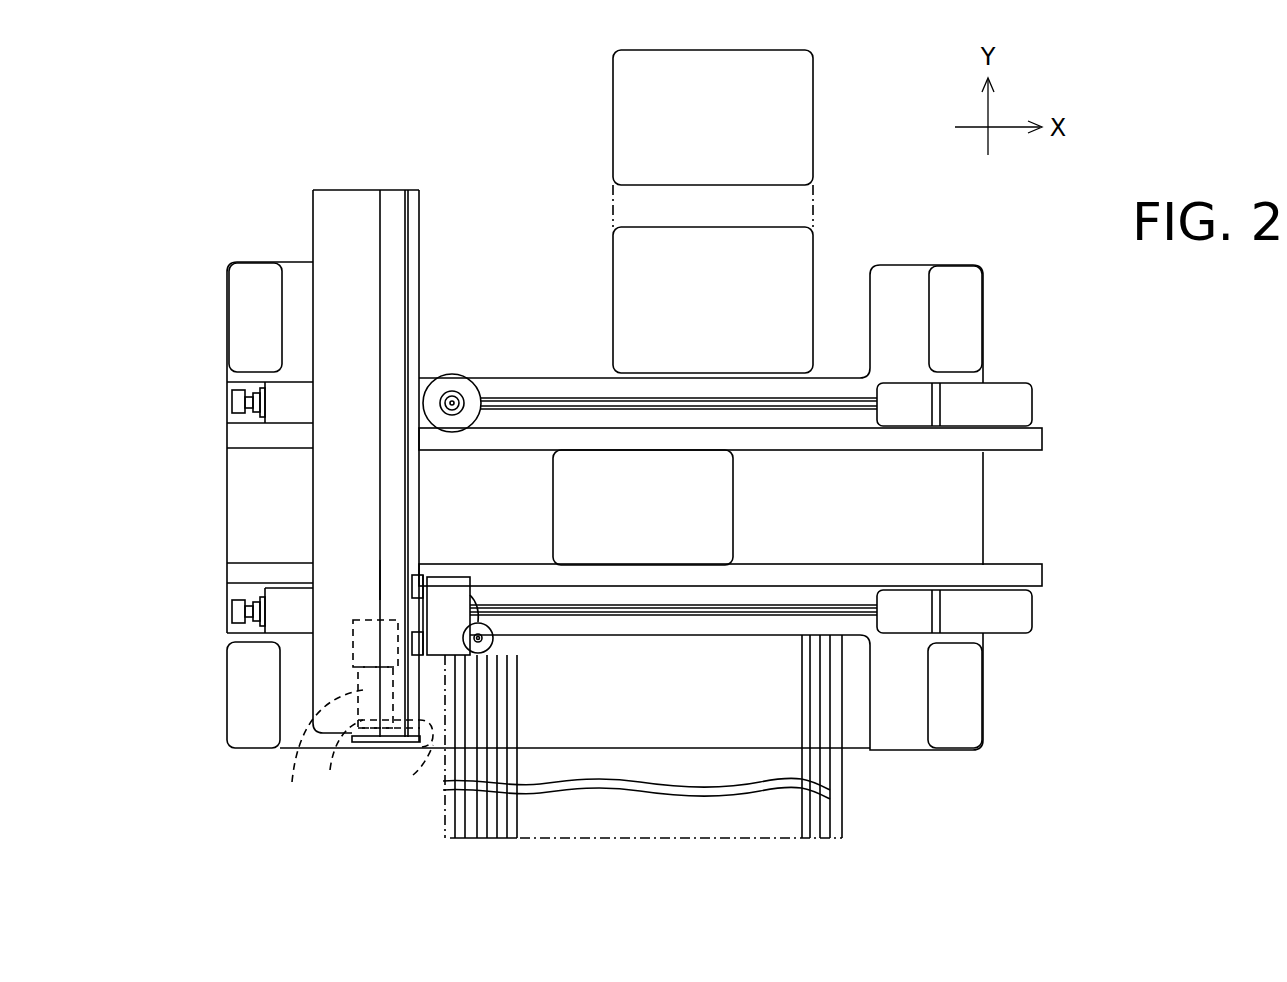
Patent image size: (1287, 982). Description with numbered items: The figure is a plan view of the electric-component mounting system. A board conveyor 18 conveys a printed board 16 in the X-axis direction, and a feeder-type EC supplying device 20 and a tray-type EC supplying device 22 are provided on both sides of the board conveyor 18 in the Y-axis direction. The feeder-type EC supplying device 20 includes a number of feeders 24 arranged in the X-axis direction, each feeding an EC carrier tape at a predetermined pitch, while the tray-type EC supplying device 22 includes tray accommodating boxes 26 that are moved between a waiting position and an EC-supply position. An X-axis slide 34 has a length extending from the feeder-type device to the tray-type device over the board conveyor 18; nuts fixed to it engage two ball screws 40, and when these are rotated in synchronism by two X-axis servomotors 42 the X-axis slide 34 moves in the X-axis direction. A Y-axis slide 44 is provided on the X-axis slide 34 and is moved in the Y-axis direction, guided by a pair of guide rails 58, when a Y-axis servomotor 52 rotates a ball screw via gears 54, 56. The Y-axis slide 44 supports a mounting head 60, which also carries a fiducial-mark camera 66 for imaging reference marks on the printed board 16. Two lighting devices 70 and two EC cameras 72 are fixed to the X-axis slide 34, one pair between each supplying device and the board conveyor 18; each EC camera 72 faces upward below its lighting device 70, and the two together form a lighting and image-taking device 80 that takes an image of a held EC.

The printed board 16 is at (710, 522).
The board conveyor 18 is at (1060, 430).
The feeder-type EC supplying device 20 is at (856, 773).
The tray-type EC supplying device 22 is at (836, 238).
The feeder 24 is at (455, 772).
The tray accommodating box 26 is at (792, 130).
The X-axis slide 34 is at (328, 218).
The ball screw 40 is at (866, 407).
The X-axis servomotor 42 is at (960, 398).
The Y-axis slide 44 is at (419, 571).
The Y-axis servomotor 52 is at (336, 717).
The gear 54 is at (354, 733).
The gear 56 is at (395, 757).
The guide rail 58 is at (413, 193).
The mounting head 60 is at (445, 590).
The fiducial-mark camera 66 is at (481, 646).
The lighting device 70 is at (451, 393).
The EC camera 72 is at (462, 400).
The lighting and image-taking device 80 is at (472, 360).